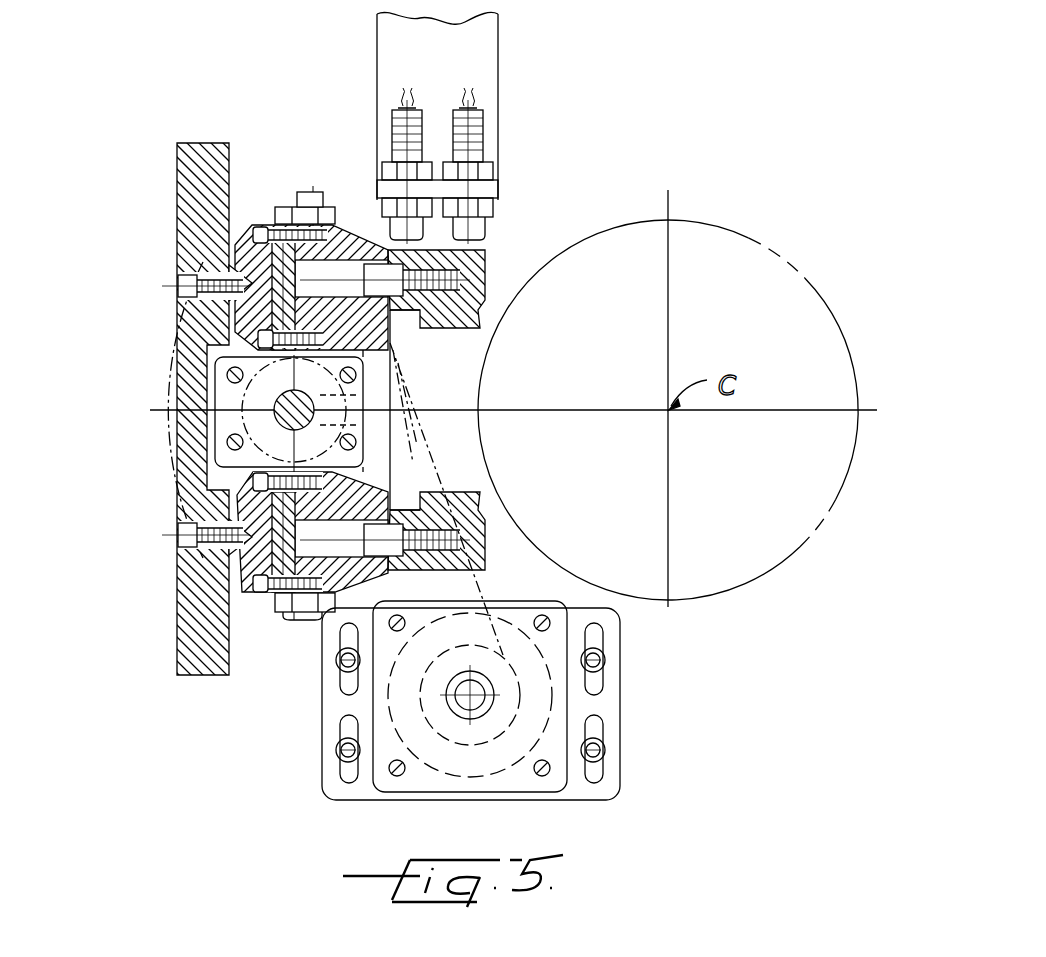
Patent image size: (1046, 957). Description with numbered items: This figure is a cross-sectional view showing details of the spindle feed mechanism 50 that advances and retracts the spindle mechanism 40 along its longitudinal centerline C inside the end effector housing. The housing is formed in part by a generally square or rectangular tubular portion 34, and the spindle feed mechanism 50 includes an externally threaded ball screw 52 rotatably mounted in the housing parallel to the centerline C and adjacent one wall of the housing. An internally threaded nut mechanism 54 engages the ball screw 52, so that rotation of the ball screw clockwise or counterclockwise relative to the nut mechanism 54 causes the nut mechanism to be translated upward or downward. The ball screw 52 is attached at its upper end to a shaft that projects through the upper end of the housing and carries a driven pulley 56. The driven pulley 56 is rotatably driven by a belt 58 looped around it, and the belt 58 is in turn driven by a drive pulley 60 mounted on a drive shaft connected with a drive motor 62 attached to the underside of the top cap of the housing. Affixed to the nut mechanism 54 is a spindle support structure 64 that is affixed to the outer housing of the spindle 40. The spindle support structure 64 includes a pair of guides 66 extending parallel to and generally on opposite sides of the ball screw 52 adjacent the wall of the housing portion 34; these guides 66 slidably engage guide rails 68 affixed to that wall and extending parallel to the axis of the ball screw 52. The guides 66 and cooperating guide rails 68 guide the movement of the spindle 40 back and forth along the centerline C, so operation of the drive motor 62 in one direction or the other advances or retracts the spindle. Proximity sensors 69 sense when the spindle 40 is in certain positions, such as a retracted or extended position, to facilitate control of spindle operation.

The tubular portion 34 is at (195, 215).
The spindle mechanism 40 is at (747, 238).
The spindle feed mechanism 50 is at (287, 170).
The ball screw 52 is at (312, 402).
The nut mechanism 54 is at (218, 429).
The driven pulley 56 is at (408, 440).
The belt 58 is at (493, 627).
The drive pulley 60 is at (515, 697).
The drive motor 62 is at (375, 732).
The spindle support structure 64 is at (497, 270).
The guides 66 is at (235, 255).
The guide rails 68 is at (247, 290).
The proximity sensors 69 is at (493, 213).